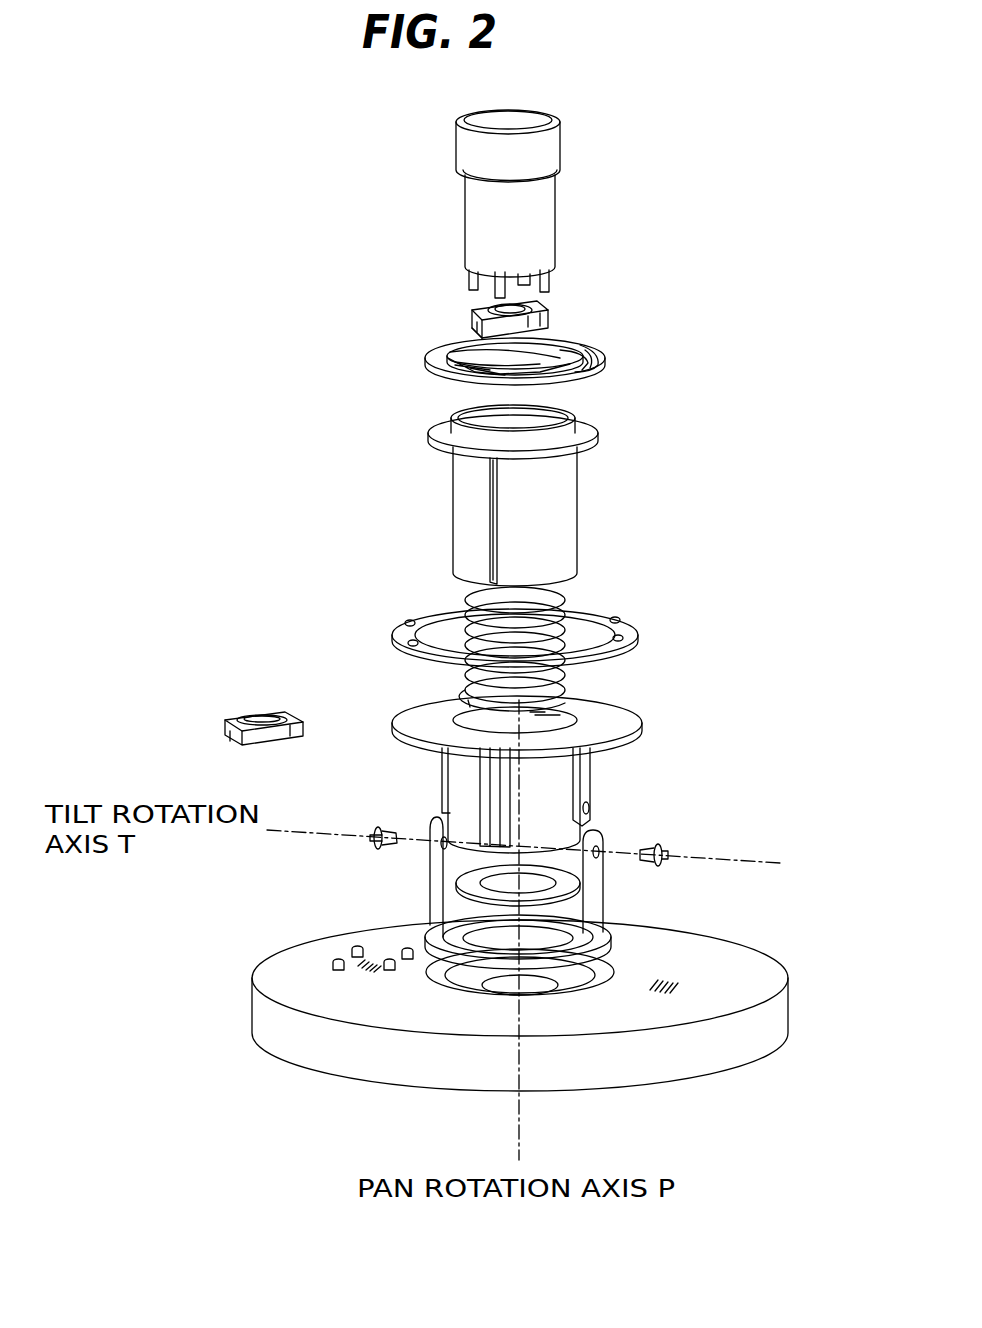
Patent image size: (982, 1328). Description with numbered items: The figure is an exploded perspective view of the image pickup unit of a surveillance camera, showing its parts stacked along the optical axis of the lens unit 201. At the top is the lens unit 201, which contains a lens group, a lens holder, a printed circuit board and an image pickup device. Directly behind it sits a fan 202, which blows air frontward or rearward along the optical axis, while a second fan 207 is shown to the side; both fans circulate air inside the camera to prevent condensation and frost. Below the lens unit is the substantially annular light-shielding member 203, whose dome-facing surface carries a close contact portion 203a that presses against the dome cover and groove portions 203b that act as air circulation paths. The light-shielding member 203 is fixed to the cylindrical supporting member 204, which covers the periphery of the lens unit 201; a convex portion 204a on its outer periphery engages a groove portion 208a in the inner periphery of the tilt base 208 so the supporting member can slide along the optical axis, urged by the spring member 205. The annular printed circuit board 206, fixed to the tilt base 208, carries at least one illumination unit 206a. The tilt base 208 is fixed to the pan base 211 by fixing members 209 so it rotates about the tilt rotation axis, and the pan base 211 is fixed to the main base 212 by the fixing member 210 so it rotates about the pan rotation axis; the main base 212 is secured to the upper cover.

The lens unit 201 is at (540, 200).
The fan 202 is at (547, 320).
The light-shielding member 203 is at (515, 379).
The close contact portion 203a is at (470, 372).
The groove portions 203b is at (560, 372).
The supporting member 204 is at (503, 495).
The convex portion 204a is at (490, 510).
The spring member 205 is at (540, 598).
The printed circuit board 206 is at (568, 627).
The illumination unit 206a is at (630, 625).
The fan 207 is at (245, 712).
The tilt base 208 is at (509, 761).
The groove portion 208a is at (475, 720).
The fixing members 209 is at (375, 828).
The fixing member 210 is at (470, 878).
The pan base 211 is at (600, 893).
The main base 212 is at (765, 962).